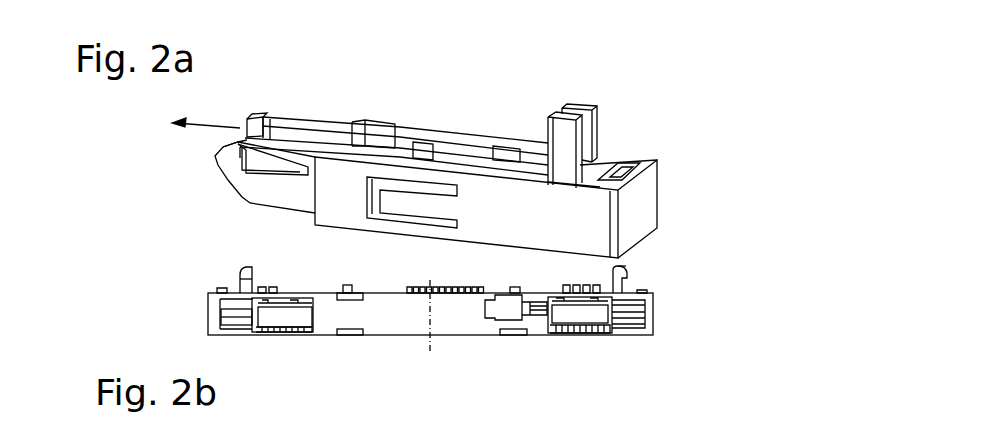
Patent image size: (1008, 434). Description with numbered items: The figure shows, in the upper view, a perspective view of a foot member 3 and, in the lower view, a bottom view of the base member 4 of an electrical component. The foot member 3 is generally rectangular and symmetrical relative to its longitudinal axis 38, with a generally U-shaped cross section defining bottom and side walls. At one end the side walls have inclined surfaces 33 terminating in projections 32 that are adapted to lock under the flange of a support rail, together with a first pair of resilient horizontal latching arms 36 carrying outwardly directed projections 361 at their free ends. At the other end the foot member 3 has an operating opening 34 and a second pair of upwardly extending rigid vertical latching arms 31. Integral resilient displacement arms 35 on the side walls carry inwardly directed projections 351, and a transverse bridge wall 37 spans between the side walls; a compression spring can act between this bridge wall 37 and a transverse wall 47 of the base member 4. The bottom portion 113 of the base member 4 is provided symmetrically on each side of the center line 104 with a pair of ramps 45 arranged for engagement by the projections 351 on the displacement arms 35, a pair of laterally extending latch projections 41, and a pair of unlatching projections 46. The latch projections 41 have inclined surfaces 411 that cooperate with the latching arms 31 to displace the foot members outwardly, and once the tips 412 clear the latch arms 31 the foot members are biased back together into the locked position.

In FIG. 2a, the foot member 3 is at (501, 205).
In FIG. 2a, the rigid vertical latching arms 31 is at (595, 108).
In FIG. 2a, the projections 32 is at (228, 147).
In FIG. 2a, the inclined surfaces 33 is at (218, 172).
In FIG. 2a, the operating opening 34 is at (608, 176).
In FIG. 2a, the resilient displacement arms 35 is at (392, 197).
In FIG. 2a, the resilient horizontal latching arms 36 is at (301, 122).
In FIG. 2a, the outwardly directed projections 361 is at (273, 116).
In FIG. 2a, the transverse bridge wall 37 is at (362, 124).
In FIG. 2a, the inwardly directed projections 351 is at (418, 142).
In FIG. 2a, the longitudinal axis 38 is at (590, 174).
In FIG. 2b, the base member 4 is at (440, 315).
In FIG. 2b, the latch projections 41 is at (240, 267).
In FIG. 2b, the inclined surfaces 411 is at (622, 270).
In FIG. 2b, the projection tips 412 is at (240, 279).
In FIG. 2b, the bottom portion 113 is at (217, 317).
In FIG. 2b, the ramps 45 is at (297, 330).
In FIG. 2b, the unlatching projections 46 is at (345, 287).
In FIG. 2b, the transverse wall 47 is at (275, 295).
In FIG. 2b, the center line 104 is at (432, 347).